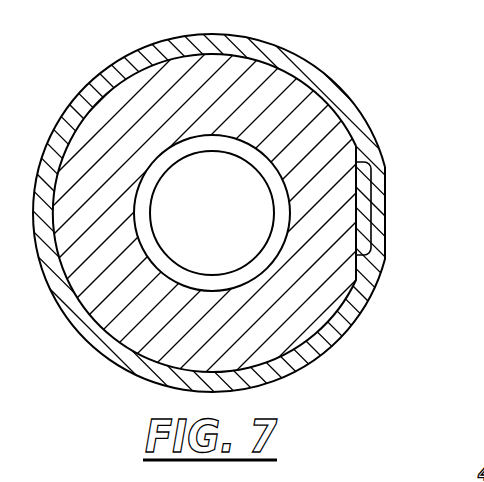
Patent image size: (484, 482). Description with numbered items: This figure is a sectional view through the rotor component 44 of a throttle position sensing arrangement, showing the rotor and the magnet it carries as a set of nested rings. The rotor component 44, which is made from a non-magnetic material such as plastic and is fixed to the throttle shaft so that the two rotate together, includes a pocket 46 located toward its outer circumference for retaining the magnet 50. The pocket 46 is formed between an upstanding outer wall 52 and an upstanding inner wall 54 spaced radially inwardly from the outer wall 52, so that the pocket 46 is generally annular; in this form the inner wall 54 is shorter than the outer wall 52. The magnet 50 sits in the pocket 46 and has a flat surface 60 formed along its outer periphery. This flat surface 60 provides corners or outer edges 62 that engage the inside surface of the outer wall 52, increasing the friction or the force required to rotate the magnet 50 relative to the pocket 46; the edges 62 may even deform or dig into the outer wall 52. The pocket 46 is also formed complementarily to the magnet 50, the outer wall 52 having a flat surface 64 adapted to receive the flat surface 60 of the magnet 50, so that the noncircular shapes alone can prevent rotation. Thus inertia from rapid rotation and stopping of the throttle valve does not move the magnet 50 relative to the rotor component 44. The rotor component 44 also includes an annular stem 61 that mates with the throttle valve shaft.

The rotor component 44 is at (242, 241).
The pocket 46 is at (157, 66).
The magnet 50 is at (279, 82).
The outer wall 52 is at (288, 368).
The inner wall 54 is at (172, 273).
The flat surface 60 is at (356, 200).
The outer edges 62 is at (357, 150).
The flat surface of outer wall 64 is at (358, 226).
The annular stem 61 is at (420, 471).